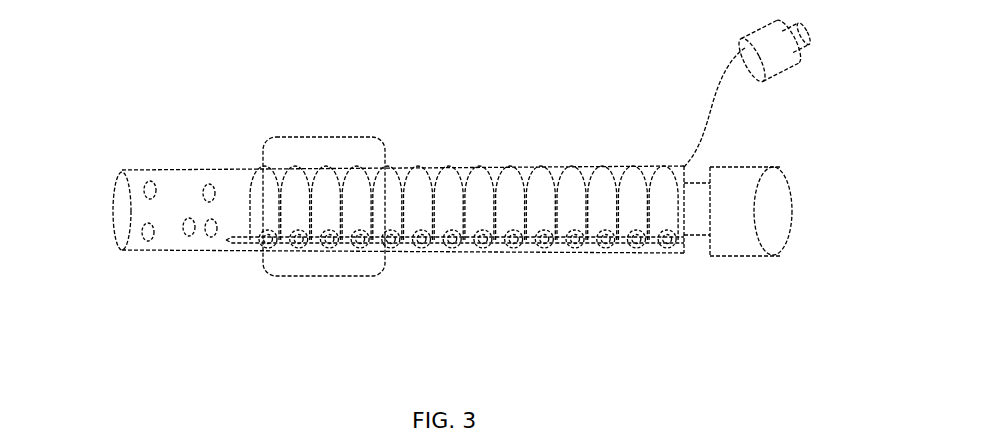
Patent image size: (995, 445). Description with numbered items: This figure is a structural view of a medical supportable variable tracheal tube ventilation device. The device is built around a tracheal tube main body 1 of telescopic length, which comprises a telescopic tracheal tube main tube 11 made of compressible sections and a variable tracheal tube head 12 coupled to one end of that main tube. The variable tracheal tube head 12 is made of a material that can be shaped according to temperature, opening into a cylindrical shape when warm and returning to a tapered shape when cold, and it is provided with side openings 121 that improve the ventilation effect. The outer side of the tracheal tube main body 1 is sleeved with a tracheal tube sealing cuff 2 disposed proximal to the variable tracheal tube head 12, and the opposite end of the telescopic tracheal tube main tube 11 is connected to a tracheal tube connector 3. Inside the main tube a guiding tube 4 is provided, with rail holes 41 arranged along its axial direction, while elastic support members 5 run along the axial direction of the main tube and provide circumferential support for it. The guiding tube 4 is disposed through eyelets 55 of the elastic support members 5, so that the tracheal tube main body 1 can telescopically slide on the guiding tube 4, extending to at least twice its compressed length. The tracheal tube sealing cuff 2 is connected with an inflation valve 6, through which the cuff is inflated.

The tracheal tube main body 1 is at (165, 125).
The telescopic tracheal tube main tube 11 is at (437, 165).
The variable tracheal tube head 12 is at (187, 186).
The side openings 121 is at (150, 238).
The tracheal tube sealing cuff 2 is at (342, 268).
The rail holes 41 is at (288, 248).
The guiding tube 4 is at (592, 250).
The elastic support members 5 is at (492, 200).
The eyelets of the elastic support members 55 is at (452, 250).
The tracheal tube connector 3 is at (720, 218).
The inflation valve 6 is at (772, 60).